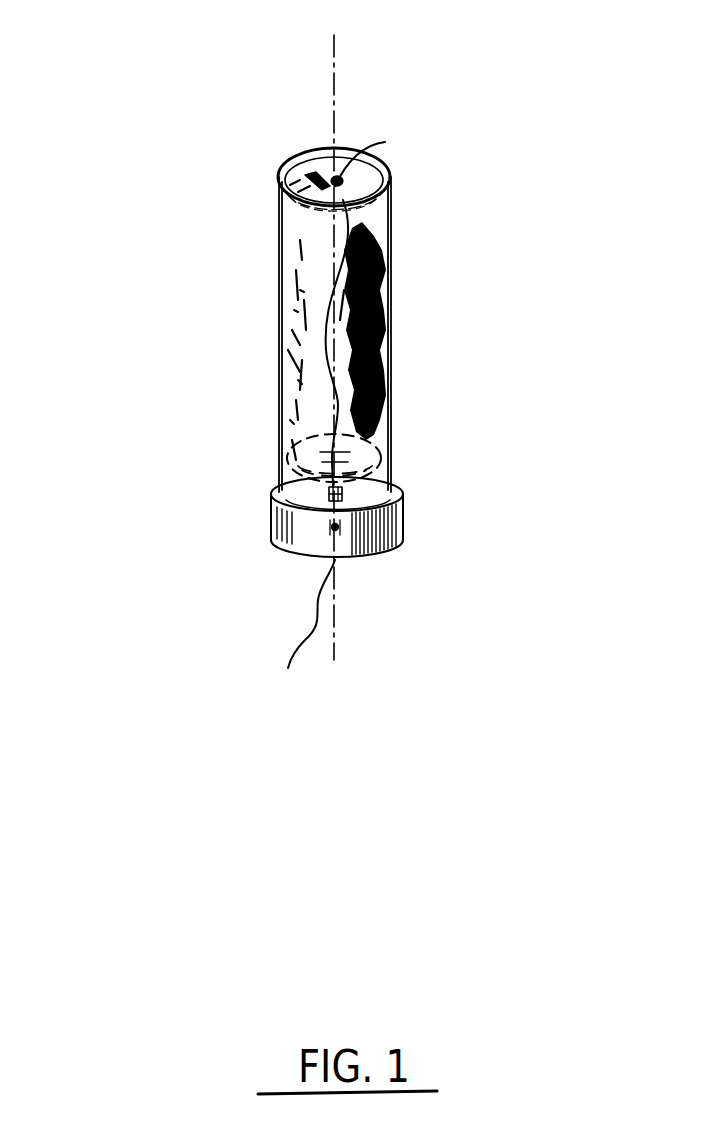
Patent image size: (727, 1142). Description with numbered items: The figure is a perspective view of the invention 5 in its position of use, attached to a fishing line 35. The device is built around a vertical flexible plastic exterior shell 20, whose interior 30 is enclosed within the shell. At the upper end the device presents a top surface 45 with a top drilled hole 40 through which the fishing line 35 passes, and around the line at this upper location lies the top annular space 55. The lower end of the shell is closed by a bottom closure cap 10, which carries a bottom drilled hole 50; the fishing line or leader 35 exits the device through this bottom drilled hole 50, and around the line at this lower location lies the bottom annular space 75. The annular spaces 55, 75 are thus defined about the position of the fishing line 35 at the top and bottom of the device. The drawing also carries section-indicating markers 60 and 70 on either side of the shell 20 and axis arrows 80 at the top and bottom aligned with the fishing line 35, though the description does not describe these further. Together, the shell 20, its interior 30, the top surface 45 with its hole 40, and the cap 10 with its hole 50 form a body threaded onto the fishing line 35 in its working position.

The invention 5 is at (430, 326).
The bottom closure cap 10 is at (403, 512).
The vertical flexible plastic exterior shell 20 is at (392, 373).
The interior of the flexible plastic shell 30 is at (292, 375).
The fishing line 35 is at (392, 141).
The top drilled hole 40 is at (277, 232).
The top surface 45 is at (318, 183).
The bottom drilled hole 50 is at (333, 527).
The top annular space 55 is at (340, 173).
The section line 6-6 60 is at (195, 184).
The section line 7-7 70 is at (192, 420).
The bottom annular space 75 is at (340, 528).
The longitudinal axis 80 is at (379, 343).